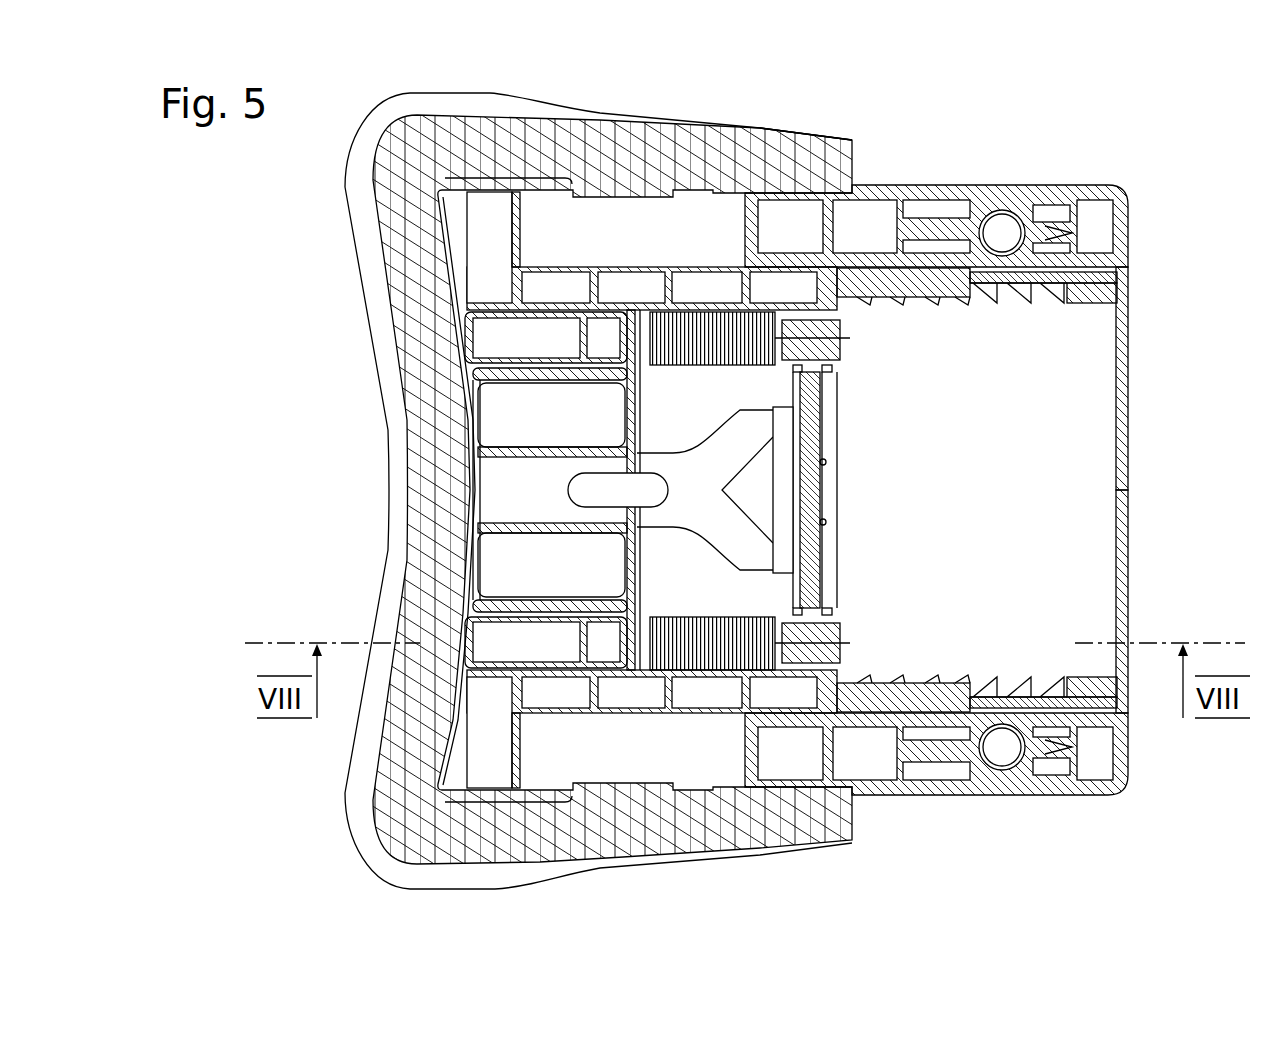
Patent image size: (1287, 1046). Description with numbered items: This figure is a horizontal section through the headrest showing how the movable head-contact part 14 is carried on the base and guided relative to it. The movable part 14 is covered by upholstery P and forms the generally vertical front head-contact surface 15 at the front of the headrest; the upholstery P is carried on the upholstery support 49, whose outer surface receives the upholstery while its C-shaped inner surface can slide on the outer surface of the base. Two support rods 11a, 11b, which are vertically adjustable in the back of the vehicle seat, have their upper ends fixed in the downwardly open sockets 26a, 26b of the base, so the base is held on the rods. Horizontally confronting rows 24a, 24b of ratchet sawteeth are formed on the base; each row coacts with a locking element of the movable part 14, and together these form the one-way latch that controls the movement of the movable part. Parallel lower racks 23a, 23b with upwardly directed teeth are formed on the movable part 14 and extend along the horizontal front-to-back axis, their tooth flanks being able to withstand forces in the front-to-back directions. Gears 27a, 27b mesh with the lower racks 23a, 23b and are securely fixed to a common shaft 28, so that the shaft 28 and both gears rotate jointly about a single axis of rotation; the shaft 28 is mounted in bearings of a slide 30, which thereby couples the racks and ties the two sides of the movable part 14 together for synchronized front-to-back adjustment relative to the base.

The movable head-contact part 14 is at (620, 140).
The front head-contact surface 15 is at (388, 478).
The upholstery support 49 is at (513, 177).
The upholstery P is at (730, 147).
The support rod 11a is at (1017, 207).
The support rod 11b is at (1023, 773).
The lower rack 23a is at (722, 363).
The lower rack 23b is at (705, 618).
The row of ratchet teeth 24a is at (1021, 305).
The row of ratchet teeth 24b is at (1016, 683).
The socket 26a is at (993, 227).
The socket 26b is at (995, 757).
The gear 27a is at (830, 343).
The gear 27b is at (830, 632).
The shaft 28 is at (820, 468).
The slide 30 is at (929, 268).